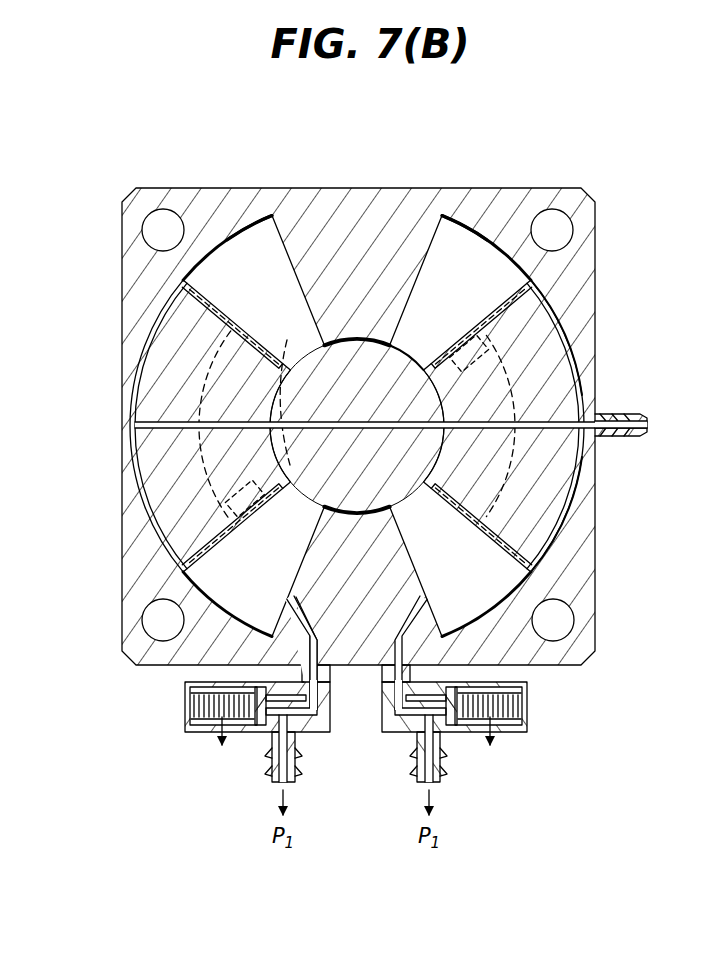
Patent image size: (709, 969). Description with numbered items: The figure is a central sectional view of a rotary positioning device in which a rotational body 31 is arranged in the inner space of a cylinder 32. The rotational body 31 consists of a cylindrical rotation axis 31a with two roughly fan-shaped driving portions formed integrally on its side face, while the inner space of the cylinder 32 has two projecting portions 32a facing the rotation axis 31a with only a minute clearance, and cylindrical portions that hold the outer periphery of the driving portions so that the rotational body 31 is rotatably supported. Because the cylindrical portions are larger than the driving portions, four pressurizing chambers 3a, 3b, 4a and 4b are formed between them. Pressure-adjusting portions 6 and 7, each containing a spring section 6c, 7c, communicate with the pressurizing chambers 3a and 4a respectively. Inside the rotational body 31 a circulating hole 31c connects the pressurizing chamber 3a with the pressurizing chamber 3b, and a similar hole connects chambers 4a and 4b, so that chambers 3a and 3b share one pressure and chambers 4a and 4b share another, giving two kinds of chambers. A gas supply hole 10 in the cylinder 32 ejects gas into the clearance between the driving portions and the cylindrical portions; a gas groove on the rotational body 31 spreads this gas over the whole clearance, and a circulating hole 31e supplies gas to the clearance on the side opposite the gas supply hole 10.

The pressurizing chamber 3a is at (235, 578).
The pressurizing chamber 3b is at (430, 260).
The pressurizing chamber 4a is at (483, 580).
The pressurizing chamber 4b is at (260, 245).
The pressure-adjusting portion 6 is at (226, 747).
The spring chamber of valve 6c is at (237, 705).
The pressure-adjusting portion 7 is at (490, 747).
The spring chamber of valve 7c is at (522, 705).
The gas supply hole 10 is at (632, 440).
The rotational body 31 is at (361, 416).
The rotation axis 31a is at (392, 362).
The circulating hole 31c is at (286, 344).
The circulating hole 31e is at (420, 482).
The cylinder 32 is at (370, 390).
The projecting portion 32a is at (352, 337).